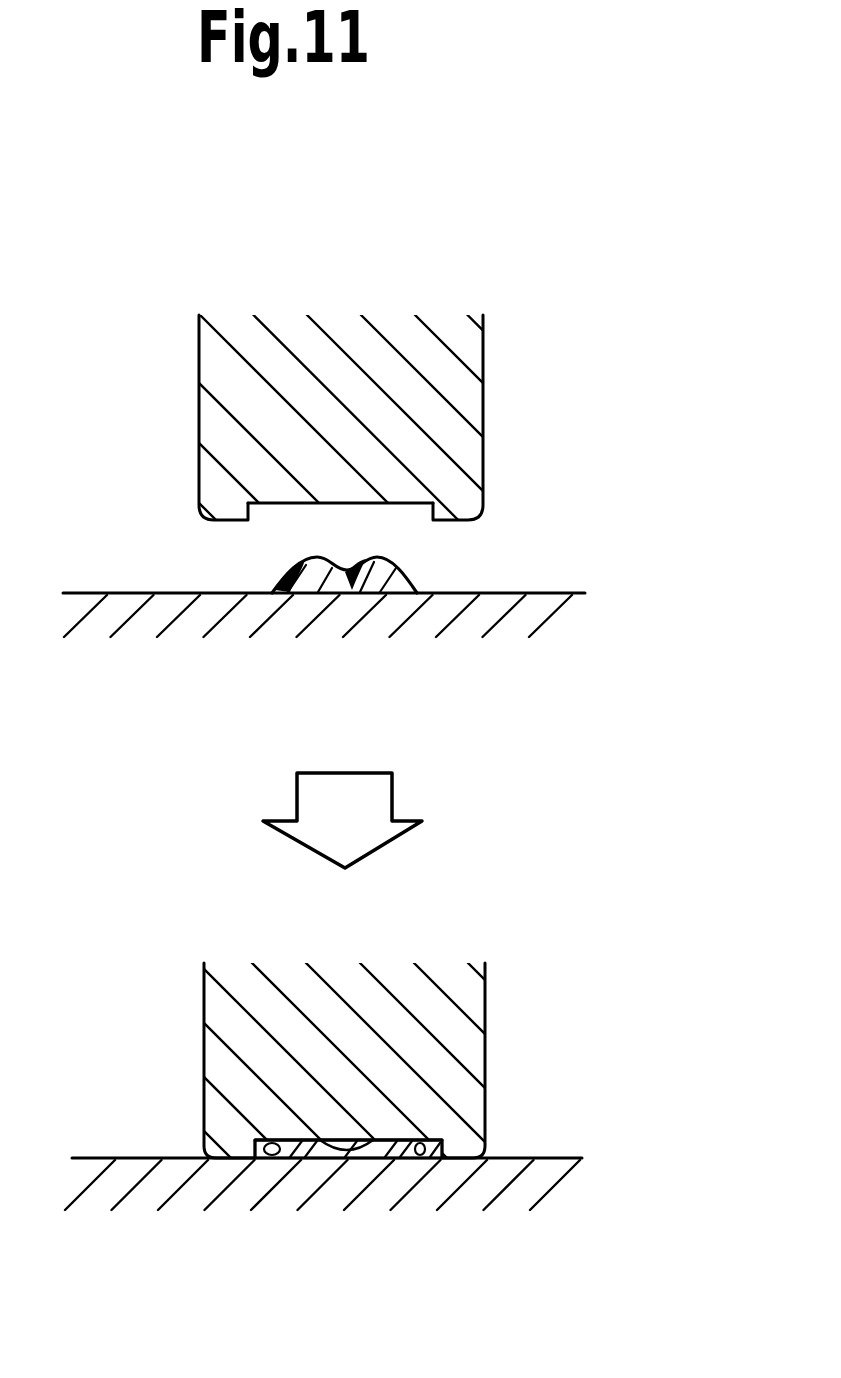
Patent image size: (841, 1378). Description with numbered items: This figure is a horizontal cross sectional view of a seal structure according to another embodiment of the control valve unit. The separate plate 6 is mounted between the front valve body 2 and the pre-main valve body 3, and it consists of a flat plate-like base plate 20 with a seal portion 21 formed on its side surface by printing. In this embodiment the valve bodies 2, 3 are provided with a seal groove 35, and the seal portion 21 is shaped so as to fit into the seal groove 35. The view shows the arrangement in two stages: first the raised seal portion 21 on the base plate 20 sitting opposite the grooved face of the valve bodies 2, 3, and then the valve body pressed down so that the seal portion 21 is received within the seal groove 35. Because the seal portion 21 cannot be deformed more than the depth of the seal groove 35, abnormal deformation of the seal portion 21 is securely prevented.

The front valve body 2 is at (212, 392).
The pre-main valve body 3 is at (443, 1153).
The separate plate 6 is at (626, 546).
The base plate 20 is at (120, 598).
The seal portion 21 is at (434, 573).
The seal groove 35 is at (400, 510).